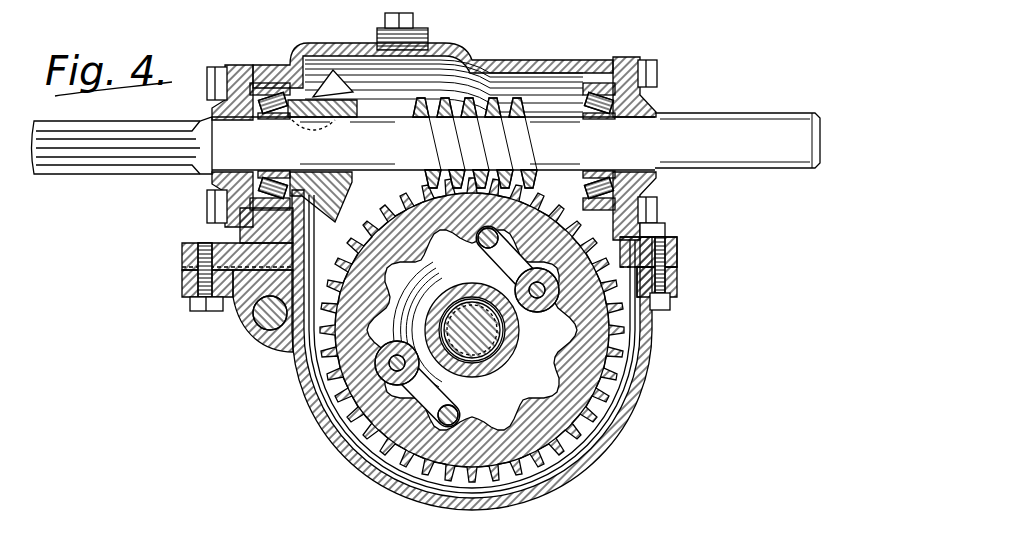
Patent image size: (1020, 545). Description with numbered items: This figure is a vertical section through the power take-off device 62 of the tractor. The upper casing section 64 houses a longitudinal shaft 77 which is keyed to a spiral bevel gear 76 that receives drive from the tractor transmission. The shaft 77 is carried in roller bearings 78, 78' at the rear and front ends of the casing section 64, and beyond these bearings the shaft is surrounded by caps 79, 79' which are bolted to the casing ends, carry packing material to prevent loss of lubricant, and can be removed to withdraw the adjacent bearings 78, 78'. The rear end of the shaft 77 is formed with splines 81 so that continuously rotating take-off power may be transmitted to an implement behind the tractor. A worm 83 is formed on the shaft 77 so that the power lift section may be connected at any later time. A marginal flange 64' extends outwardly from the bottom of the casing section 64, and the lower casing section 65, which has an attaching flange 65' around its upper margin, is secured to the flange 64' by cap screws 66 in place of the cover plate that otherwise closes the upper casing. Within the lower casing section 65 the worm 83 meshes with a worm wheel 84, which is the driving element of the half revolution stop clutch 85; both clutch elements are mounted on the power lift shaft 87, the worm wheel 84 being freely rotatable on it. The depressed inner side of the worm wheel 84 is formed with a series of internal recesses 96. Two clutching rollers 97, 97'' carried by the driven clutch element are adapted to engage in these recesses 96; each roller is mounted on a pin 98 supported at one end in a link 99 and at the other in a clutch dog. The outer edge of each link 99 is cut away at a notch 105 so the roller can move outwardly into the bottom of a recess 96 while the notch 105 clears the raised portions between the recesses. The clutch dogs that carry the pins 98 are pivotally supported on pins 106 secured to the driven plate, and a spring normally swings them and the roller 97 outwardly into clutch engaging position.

The power take-off device 62 is at (538, 60).
The upper casing section 64 is at (342, 135).
The marginal flange 64' is at (205, 255).
The lower casing section 65 is at (442, 350).
The attaching flange 65' is at (208, 286).
The cap screws 66 is at (213, 313).
The spiral bevel gear 76 is at (355, 97).
The shaft 77 is at (711, 116).
The roller bearing 78 is at (270, 125).
The roller bearing 78' is at (611, 119).
The cap 79 is at (229, 133).
The cap 79' is at (650, 134).
The splines 81 is at (96, 150).
The worm 83 is at (462, 100).
The worm wheel 84 is at (613, 340).
The half revolution stop clutch 85 is at (625, 386).
The shaft 87 is at (472, 355).
The internal recesses 96 is at (418, 250).
The clutching roller 97 is at (397, 352).
The clutching roller 97'' is at (556, 298).
The pin 98 is at (410, 348).
The link 99 is at (484, 262).
The notch 105 is at (327, 423).
The pin 106 is at (478, 239).